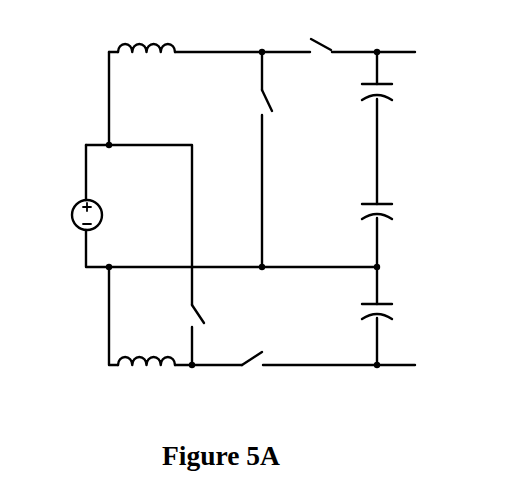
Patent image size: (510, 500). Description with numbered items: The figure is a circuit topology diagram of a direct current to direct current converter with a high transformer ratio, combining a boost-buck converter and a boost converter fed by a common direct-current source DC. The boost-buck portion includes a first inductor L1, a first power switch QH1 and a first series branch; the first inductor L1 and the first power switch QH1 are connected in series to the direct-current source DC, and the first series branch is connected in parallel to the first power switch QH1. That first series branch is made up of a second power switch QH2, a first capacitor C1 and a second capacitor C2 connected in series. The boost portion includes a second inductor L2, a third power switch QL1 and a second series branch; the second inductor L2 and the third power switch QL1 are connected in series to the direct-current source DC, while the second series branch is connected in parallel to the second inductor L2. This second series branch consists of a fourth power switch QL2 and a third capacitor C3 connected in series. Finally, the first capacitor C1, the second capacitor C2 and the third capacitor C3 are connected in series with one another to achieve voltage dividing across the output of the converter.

The direct-current source DC is at (69, 215).
The first inductor L1 is at (146, 36).
The second inductor L2 is at (146, 376).
The first power switch QH1 is at (248, 98).
The second power switch QH2 is at (314, 32).
The third power switch QL1 is at (181, 312).
The fourth power switch QL2 is at (254, 373).
The first capacitor C1 is at (364, 91).
The second capacitor C2 is at (364, 212).
The third capacitor C3 is at (364, 312).